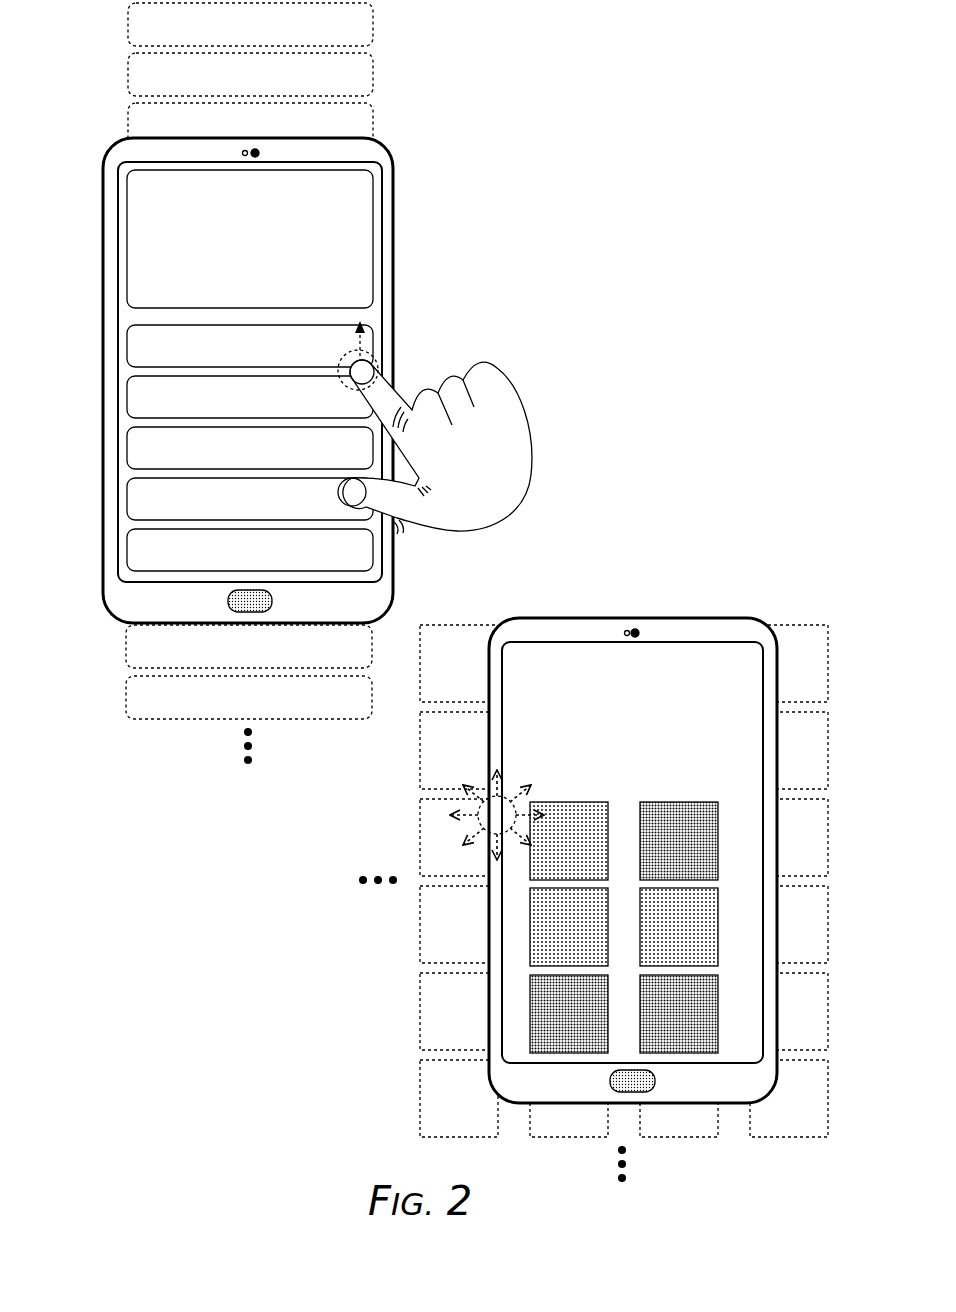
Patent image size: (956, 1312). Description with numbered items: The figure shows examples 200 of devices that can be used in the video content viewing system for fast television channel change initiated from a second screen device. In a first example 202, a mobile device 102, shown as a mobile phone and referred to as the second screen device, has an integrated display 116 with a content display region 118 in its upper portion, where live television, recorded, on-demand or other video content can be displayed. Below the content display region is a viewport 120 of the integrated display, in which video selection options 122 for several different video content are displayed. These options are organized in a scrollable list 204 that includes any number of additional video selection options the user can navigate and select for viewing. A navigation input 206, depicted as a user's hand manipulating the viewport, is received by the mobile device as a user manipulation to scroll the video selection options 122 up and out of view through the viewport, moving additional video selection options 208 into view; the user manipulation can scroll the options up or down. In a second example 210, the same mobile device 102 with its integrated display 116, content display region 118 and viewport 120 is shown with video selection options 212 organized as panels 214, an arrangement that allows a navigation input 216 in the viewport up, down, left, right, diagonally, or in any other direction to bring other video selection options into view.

The examples of devices 200 is at (579, 86).
The first example 202 is at (427, 276).
The mobile device 102 is at (394, 237).
The integrated display 116 is at (381, 192).
The content display region 118 is at (234, 261).
The viewport 120 is at (127, 522).
The video selection options 122 is at (132, 118).
The scrollable list 204 is at (141, 642).
The navigation input 206 is at (437, 356).
The additional video selection options 208 is at (135, 443).
The second example 210 is at (617, 562).
The video selection options 212 is at (553, 858).
The panels 214 is at (432, 914).
The navigation input 216 is at (481, 788).